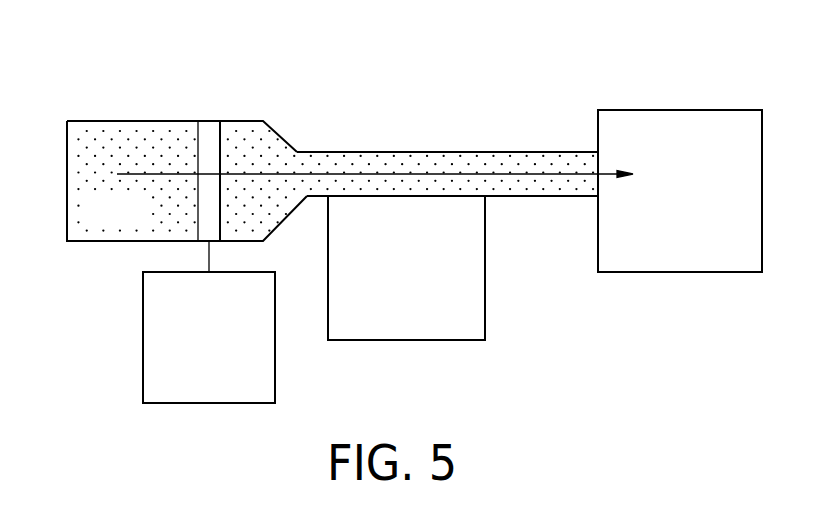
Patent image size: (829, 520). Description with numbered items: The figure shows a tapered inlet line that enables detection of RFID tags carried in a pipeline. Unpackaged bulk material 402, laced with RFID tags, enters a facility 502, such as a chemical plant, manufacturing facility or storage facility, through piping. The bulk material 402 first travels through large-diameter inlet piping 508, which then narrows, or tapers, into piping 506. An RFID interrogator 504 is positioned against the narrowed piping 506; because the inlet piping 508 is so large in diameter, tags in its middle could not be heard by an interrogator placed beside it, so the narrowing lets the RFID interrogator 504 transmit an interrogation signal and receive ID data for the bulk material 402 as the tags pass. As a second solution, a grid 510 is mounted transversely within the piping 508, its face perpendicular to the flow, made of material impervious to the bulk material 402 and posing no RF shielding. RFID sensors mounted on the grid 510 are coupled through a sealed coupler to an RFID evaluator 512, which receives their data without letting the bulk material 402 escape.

The piping 508 is at (95, 121).
The grid 510 is at (209, 132).
The bulk material 402 is at (145, 222).
The piping 506 is at (435, 152).
The facility 502 is at (710, 226).
The RFID interrogator 504 is at (437, 310).
The RFID evaluator 512 is at (232, 377).